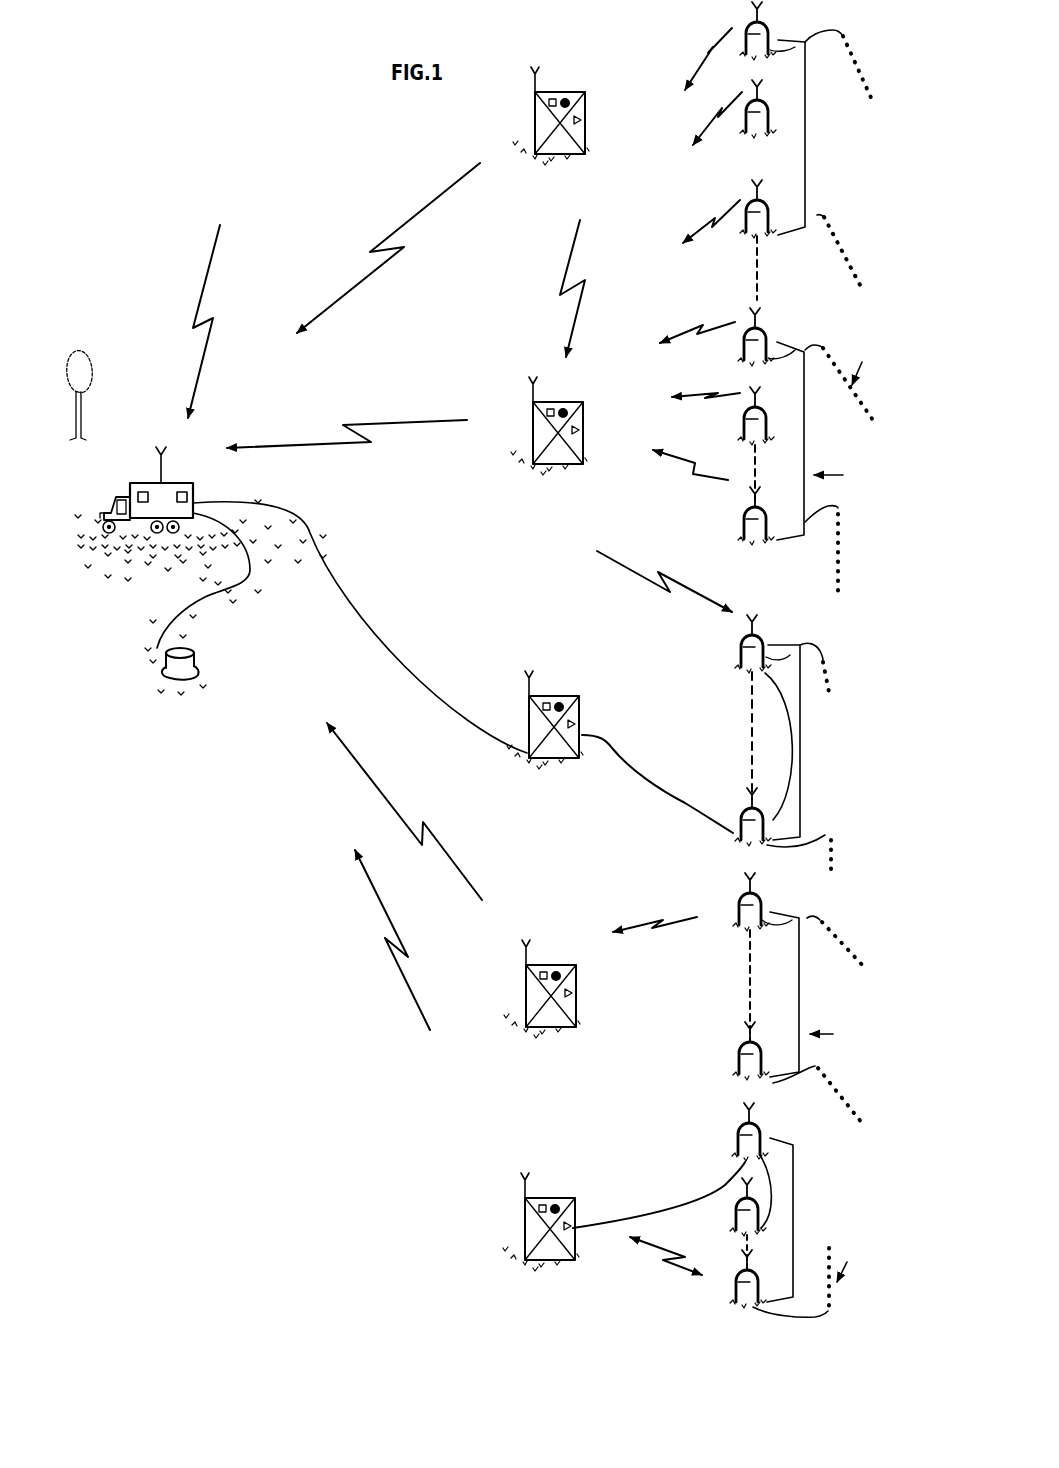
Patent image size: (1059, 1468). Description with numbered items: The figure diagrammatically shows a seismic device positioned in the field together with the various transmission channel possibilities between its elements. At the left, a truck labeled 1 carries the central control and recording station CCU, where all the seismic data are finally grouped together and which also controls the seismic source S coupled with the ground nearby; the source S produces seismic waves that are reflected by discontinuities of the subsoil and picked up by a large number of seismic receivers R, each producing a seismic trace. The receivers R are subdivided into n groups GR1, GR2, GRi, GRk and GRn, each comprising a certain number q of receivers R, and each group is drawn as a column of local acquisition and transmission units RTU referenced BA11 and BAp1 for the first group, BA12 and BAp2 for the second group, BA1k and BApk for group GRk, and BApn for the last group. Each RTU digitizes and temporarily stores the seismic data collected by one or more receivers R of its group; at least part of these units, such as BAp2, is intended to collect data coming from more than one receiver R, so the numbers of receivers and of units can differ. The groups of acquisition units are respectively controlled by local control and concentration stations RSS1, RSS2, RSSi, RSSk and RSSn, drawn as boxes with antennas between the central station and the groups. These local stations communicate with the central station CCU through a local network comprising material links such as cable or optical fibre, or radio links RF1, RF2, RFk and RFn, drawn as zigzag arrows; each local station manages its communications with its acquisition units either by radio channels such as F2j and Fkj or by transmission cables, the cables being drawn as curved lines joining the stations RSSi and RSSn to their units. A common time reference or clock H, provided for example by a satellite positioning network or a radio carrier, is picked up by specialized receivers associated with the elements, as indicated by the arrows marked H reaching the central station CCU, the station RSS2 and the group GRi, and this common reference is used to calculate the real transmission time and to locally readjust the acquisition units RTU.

The central control and recording station vehicle 1 is at (168, 514).
The central control and recording station CCU is at (141, 474).
The seismic source S is at (177, 661).
The common time reference or clock H is at (460, 402).
The radio link RF1 is at (388, 248).
The radio link RF2 is at (347, 420).
The radio link RFk is at (404, 811).
The radio link RFn is at (387, 940).
The local control and concentration station RSS1 is at (553, 112).
The local control and concentration station RSS2 is at (552, 426).
The local control and concentration station RSSi is at (548, 720).
The local control and concentration station RSSk is at (550, 989).
The local control and concentration station RSSn is at (545, 1222).
The group of receivers GR1 is at (789, 150).
The group of receivers GR2 is at (769, 450).
The group of receivers GRi is at (717, 746).
The group of receivers GRk is at (744, 998).
The group of receivers GRn is at (713, 1210).
The local acquisition and transmission unit BA11 is at (776, 30).
The local acquisition and transmission unit BAp1 is at (779, 226).
The local acquisition and transmission unit BA12 is at (776, 336).
The local acquisition and transmission unit BAp2 is at (773, 536).
The local acquisition and transmission unit BA1k is at (773, 902).
The local acquisition and transmission unit BApk is at (727, 1051).
The local acquisition and transmission unit BApn is at (723, 1283).
The local acquisition and transmission unit RTU is at (824, 168).
The seismic receiver R is at (863, 60).
The radio channel F2j is at (706, 385).
The radio channel Fkj is at (655, 914).